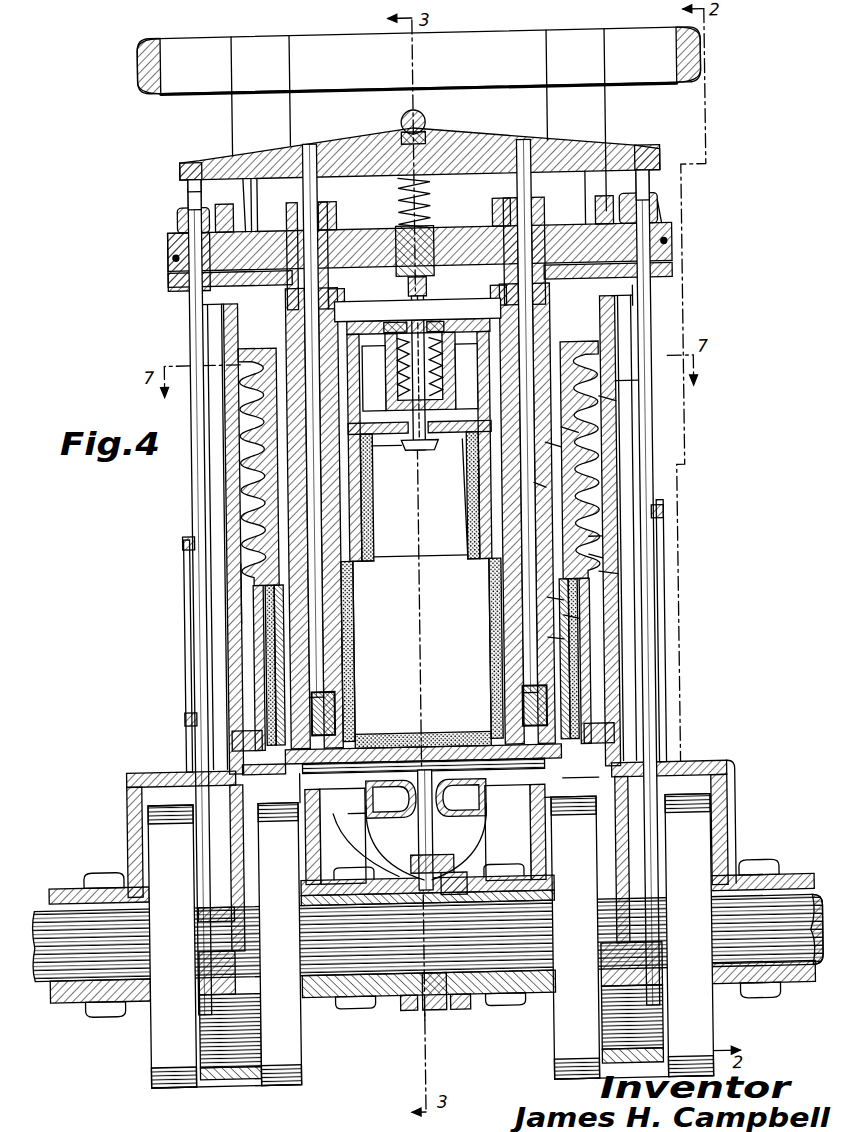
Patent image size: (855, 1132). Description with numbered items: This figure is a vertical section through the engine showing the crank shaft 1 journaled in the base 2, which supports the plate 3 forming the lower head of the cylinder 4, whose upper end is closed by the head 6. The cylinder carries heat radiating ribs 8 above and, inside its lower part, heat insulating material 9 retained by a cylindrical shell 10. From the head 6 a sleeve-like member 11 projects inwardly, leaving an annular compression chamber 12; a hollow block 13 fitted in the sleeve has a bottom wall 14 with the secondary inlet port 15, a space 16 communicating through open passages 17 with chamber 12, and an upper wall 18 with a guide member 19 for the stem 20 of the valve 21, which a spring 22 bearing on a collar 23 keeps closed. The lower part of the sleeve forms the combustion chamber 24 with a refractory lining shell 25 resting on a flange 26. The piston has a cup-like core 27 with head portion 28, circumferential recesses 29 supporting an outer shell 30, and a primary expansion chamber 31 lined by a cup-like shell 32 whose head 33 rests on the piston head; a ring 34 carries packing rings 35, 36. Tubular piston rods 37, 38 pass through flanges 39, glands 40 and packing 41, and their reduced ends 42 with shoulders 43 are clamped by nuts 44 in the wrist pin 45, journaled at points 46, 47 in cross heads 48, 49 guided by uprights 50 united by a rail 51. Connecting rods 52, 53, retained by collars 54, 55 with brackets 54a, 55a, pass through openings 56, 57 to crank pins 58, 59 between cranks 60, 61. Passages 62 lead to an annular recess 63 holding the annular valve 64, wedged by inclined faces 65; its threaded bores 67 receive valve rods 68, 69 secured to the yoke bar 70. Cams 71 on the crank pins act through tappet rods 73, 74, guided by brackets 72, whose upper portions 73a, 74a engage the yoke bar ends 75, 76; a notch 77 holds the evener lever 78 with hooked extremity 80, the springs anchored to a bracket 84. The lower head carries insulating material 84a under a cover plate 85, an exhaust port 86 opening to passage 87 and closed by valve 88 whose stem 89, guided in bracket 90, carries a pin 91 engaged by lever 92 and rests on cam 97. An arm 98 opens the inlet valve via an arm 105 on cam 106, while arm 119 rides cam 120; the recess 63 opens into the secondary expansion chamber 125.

The crank shaft 1 is at (760, 905).
The base 2 is at (726, 818).
The plate (lower head) 3 is at (664, 662).
The cylinder 4 is at (590, 540).
The upper head 6 is at (650, 297).
The heat radiating ribs 8 is at (560, 450).
The heat insulating material 9 is at (592, 560).
The cylindrical shell 10 is at (560, 602).
The sleeve-like member 11 is at (600, 392).
The annular compression chamber 12 is at (600, 406).
The hollow cylindrical block 13 is at (440, 448).
The bottom wall 14 is at (402, 447).
The secondary inlet port 15 is at (417, 456).
The space within hollow block 16 is at (384, 336).
The open passages 17 is at (466, 345).
The wall 18 is at (476, 345).
The guide member 19 is at (434, 330).
The valve stem 20 is at (416, 293).
The valve 21 is at (424, 440).
The spring 22 is at (400, 325).
The collar 23 is at (442, 322).
The combustion chamber 24 is at (420, 560).
The lining shell 25 is at (400, 560).
The flange 26 is at (484, 566).
The cup-like core 27 is at (600, 578).
The head portion 28 is at (446, 740).
The circumferential recesses 29 is at (572, 622).
The outer shell 30 is at (560, 642).
The primary expansion chamber 31 is at (428, 575).
The cup-like lining shell 32 is at (354, 650).
The head of lining 33 is at (418, 742).
The ring 34 is at (490, 486).
The packing rings (inner) 35 is at (476, 486).
The packing rings (outer) 36 is at (555, 470).
The tubular piston rod 37 is at (312, 480).
The tubular piston rod 38 is at (592, 428).
The annular flanges 39 is at (210, 302).
The glands 40 is at (362, 240).
The packing material 41 is at (232, 325).
The reduced ends of piston rods 42 is at (262, 225).
The shoulders 43 is at (332, 226).
The nuts 44 is at (250, 226).
The wrist pin 45 is at (215, 161).
The journal point 46 is at (250, 225).
The journal point 47 is at (578, 226).
The cross head 48 is at (198, 286).
The cross head 49 is at (640, 255).
The uprights 50 is at (298, 110).
The rail 51 is at (175, 60).
The connecting rod 52 is at (228, 586).
The connecting rod 53 is at (542, 492).
The collar 54 is at (172, 224).
The bracket 54a is at (182, 206).
The collar 55 is at (664, 215).
The bracket 55a is at (662, 202).
The opening 56 is at (156, 770).
The opening 57 is at (647, 78).
The crank pin 58 is at (238, 1068).
The crank pin 59 is at (640, 1037).
The cranks 60 is at (160, 1040).
The cranks 61 is at (550, 1050).
The passages 62 is at (358, 734).
The annular recess 63 is at (548, 802).
The annular valve 64 is at (335, 836).
The inclined faces 65 is at (521, 832).
The threaded bores 67 is at (322, 712).
The valve rod 68 is at (312, 705).
The valve rod 69 is at (572, 436).
The yoke bar 70 is at (490, 140).
The cam 71 is at (200, 1076).
The guide brackets 72 is at (183, 540).
The tappet rod 73 is at (206, 480).
The upper portion of tappet rod 73a is at (198, 190).
The tappet rod 74 is at (654, 318).
The upper portion of tappet rod 74a is at (652, 186).
The yoke bar end 75 is at (200, 160).
The yoke bar end 76 is at (652, 157).
The notch 77 is at (440, 134).
The evener lever 78 is at (427, 113).
The hooked extremity 80 is at (352, 814).
The bracket 84 is at (404, 244).
The heat insulating material 84a is at (305, 790).
The cover plate 85 is at (568, 775).
The exhaust port 86 is at (427, 860).
The passage 87 is at (442, 860).
The valve 88 is at (461, 798).
The stem 89 is at (415, 832).
The bracket 90 is at (391, 799).
The transverse pin 91 is at (366, 862).
The lever 92 is at (455, 860).
The cam 97 is at (432, 1010).
The arm 98 is at (440, 230).
The arm 105 is at (406, 1010).
The cam 106 is at (392, 1020).
The arm 119 is at (458, 1010).
The cam 120 is at (502, 1006).
The secondary expansion chamber 125 is at (262, 772).